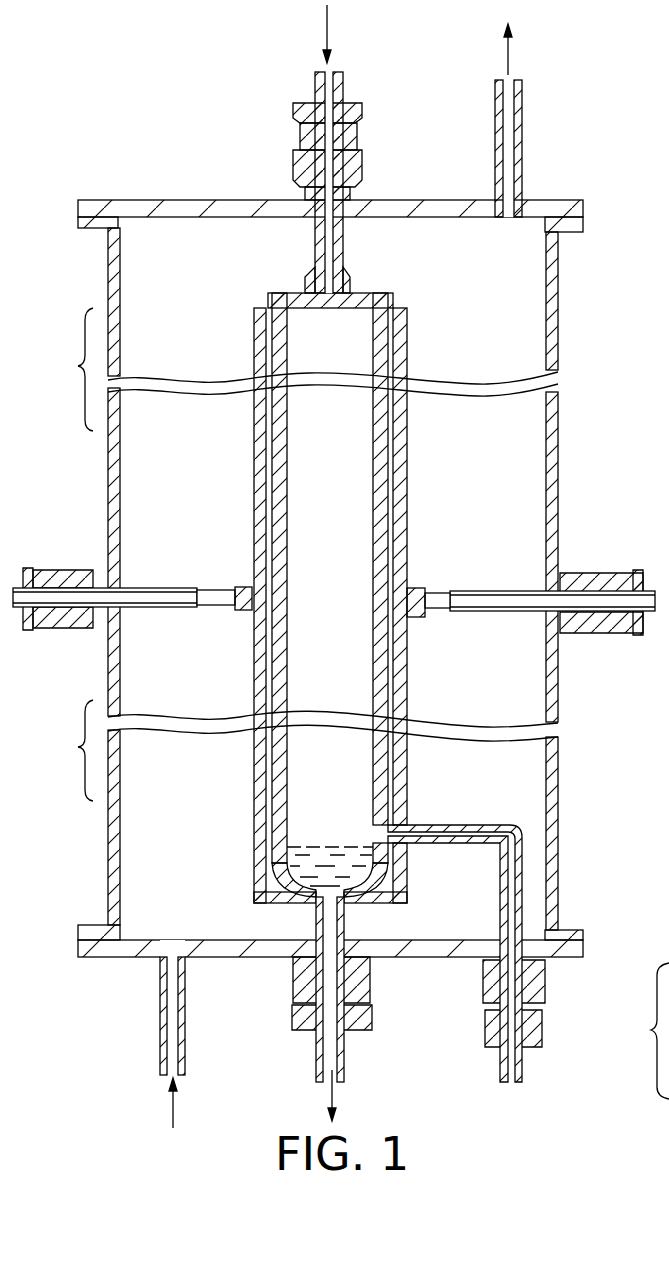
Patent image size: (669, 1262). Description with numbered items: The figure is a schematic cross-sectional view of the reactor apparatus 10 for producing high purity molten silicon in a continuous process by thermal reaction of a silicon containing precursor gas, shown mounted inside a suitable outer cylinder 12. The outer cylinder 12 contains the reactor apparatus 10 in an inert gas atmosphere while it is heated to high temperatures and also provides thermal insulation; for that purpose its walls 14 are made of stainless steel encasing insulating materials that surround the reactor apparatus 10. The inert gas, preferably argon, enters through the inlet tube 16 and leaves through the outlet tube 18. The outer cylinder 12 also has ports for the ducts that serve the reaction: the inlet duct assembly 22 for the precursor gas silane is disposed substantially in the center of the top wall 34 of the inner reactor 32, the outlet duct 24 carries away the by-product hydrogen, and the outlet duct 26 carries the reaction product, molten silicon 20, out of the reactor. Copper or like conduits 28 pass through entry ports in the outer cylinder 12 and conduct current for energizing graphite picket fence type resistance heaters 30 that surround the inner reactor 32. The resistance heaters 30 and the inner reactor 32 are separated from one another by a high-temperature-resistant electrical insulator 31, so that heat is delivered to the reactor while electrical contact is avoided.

The reactor apparatus 10 is at (327, 579).
The outer cylinder 12 is at (562, 303).
The walls 14 is at (107, 700).
The inlet tube 16 is at (160, 1002).
The outlet tube 18 is at (522, 130).
The molten silicon 20 is at (368, 872).
The inlet duct assembly 22 is at (284, 183).
The outlet duct 24 is at (523, 1065).
The outlet duct 26 is at (345, 1057).
The conduits 28 is at (58, 570).
The resistance heaters 30 is at (256, 558).
The electrical insulator 31 is at (388, 516).
The inner reactor 32 is at (380, 465).
The top wall 34 is at (376, 293).